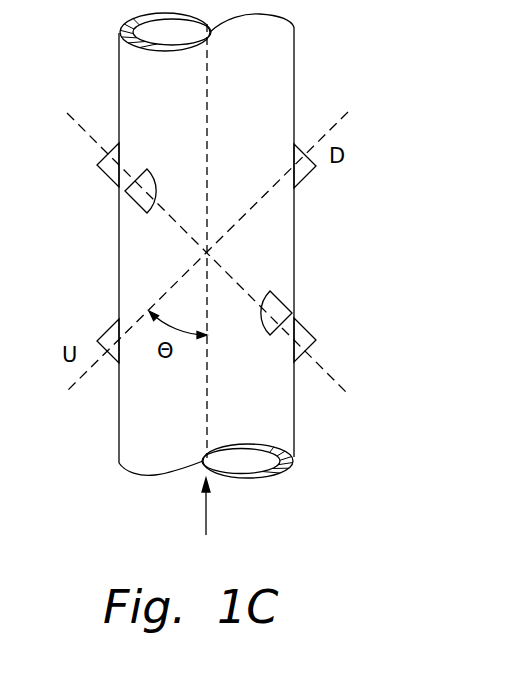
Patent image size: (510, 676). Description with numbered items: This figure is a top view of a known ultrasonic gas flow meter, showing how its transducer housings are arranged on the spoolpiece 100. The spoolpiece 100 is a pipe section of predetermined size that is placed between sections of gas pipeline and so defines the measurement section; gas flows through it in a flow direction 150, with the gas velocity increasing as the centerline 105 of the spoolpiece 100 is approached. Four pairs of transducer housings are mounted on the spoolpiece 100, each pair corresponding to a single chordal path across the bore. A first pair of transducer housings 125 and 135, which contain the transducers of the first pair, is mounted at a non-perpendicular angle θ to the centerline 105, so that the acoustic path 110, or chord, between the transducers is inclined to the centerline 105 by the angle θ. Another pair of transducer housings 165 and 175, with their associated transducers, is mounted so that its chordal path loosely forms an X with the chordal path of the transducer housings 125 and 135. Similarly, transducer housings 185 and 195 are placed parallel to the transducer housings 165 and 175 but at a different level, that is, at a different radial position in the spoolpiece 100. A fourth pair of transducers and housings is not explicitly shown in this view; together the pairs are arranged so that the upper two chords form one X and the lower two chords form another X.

The spoolpiece 100 is at (295, 64).
The centerline 105 is at (209, 79).
The path 110 is at (273, 187).
The transducer housing 125 is at (301, 178).
The transducer housing 135 is at (105, 332).
The flow direction 150 is at (208, 508).
The transducer housing 165 is at (105, 177).
The transducer housing 175 is at (306, 328).
The transducer housing 185 is at (156, 184).
The transducer housing 195 is at (265, 334).